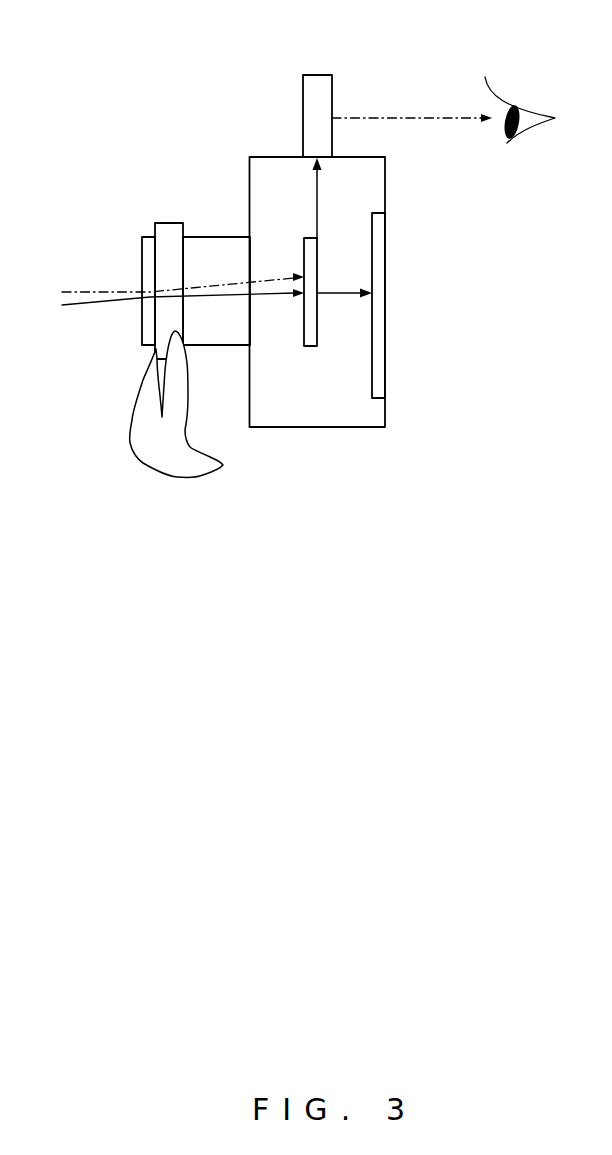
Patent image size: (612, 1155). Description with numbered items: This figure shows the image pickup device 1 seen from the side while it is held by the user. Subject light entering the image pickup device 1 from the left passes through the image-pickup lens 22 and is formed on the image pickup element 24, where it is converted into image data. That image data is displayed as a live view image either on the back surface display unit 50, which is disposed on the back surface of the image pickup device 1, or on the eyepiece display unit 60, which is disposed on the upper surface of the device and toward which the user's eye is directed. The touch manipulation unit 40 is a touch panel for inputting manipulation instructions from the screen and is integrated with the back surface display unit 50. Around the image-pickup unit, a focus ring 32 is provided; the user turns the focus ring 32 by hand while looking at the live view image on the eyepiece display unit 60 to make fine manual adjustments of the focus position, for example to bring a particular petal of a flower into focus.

The image pickup device 1 is at (414, 447).
The image-pickup lens 22 is at (205, 237).
The image pickup element 24 is at (307, 346).
The focus ring 32 is at (170, 223).
The touch manipulation unit 40 is at (435, 305).
The back surface display unit 50 is at (377, 363).
The eyepiece display unit 60 is at (318, 75).